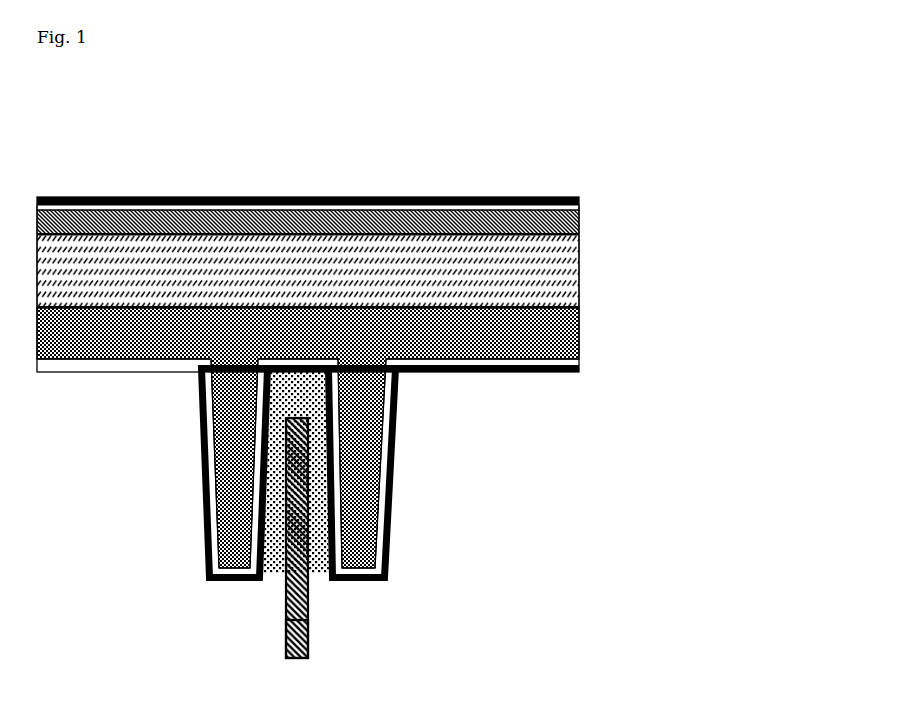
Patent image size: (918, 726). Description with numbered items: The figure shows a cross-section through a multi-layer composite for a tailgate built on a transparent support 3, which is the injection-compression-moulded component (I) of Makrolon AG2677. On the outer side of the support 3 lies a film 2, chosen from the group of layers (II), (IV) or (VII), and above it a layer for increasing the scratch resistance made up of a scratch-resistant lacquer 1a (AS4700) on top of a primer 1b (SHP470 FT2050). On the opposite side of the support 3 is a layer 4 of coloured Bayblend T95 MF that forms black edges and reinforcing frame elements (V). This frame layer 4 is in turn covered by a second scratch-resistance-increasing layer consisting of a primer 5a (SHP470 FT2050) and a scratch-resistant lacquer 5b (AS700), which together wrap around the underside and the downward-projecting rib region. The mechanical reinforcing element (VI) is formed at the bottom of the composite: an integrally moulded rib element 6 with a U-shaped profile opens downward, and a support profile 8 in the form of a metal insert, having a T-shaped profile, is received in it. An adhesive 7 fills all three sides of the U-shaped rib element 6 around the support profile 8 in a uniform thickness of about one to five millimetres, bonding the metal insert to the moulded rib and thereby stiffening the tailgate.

The scratch-resistant lacquer 1a is at (562, 197).
The primer 1b is at (580, 208).
The film 2 is at (538, 228).
The support 3 is at (540, 267).
The layer for forming black edges, reinforcing frame elements 4 is at (560, 332).
The primer 5a is at (578, 365).
The scratch-resistant lacquer 5b is at (540, 372).
The integrally moulded rib element 6 is at (357, 445).
The adhesive 7 is at (323, 563).
The support profile 8 is at (285, 630).